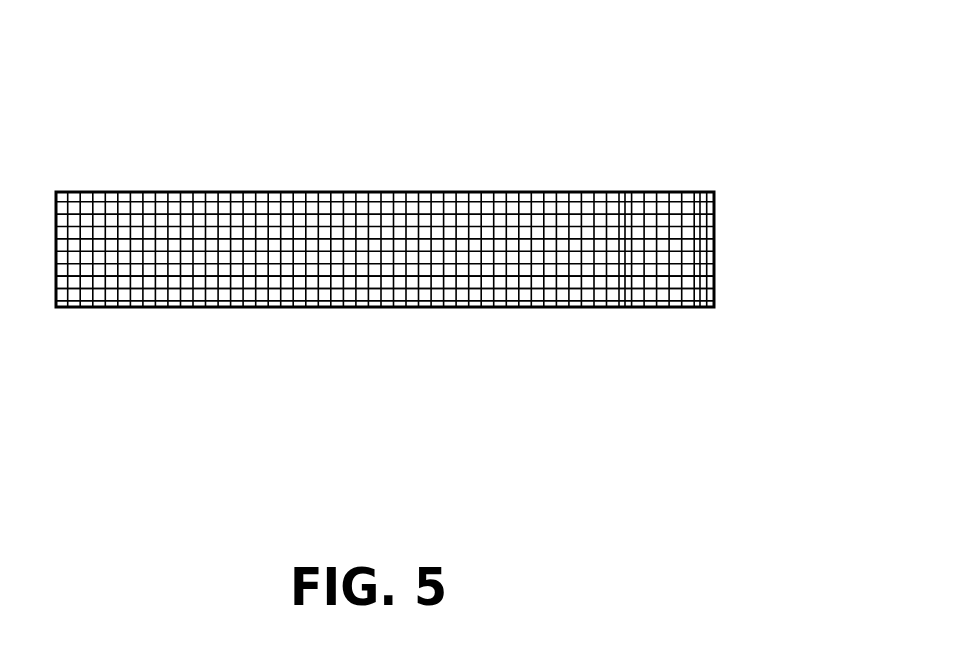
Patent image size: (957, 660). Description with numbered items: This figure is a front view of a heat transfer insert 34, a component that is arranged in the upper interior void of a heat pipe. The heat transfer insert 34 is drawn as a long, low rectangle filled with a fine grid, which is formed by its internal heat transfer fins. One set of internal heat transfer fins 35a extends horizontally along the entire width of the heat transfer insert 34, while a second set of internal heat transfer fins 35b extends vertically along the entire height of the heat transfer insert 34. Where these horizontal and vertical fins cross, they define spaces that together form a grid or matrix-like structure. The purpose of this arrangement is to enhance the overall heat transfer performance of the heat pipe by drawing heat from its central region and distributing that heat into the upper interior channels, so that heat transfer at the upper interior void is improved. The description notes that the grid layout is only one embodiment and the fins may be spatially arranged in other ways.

The heat transfer insert 34 is at (127, 127).
The internal heat transfer fins 35a is at (632, 281).
The internal heat transfer fins 35b is at (703, 291).